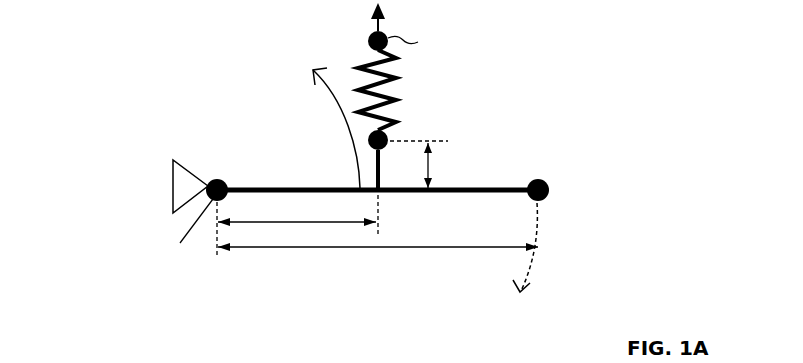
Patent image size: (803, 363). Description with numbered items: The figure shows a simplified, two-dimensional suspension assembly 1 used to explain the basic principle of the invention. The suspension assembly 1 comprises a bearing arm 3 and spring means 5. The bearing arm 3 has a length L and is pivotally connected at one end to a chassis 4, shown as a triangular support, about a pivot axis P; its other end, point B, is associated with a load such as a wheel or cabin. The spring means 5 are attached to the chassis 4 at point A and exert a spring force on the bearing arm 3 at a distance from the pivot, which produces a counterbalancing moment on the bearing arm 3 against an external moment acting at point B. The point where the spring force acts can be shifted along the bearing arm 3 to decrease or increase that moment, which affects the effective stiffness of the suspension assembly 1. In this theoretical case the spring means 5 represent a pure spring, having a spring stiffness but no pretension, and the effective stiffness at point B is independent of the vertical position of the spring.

The suspension assembly 1 is at (250, 94).
The bearing arm 3 is at (278, 186).
The chassis 4 is at (189, 192).
The spring means 5 is at (397, 81).